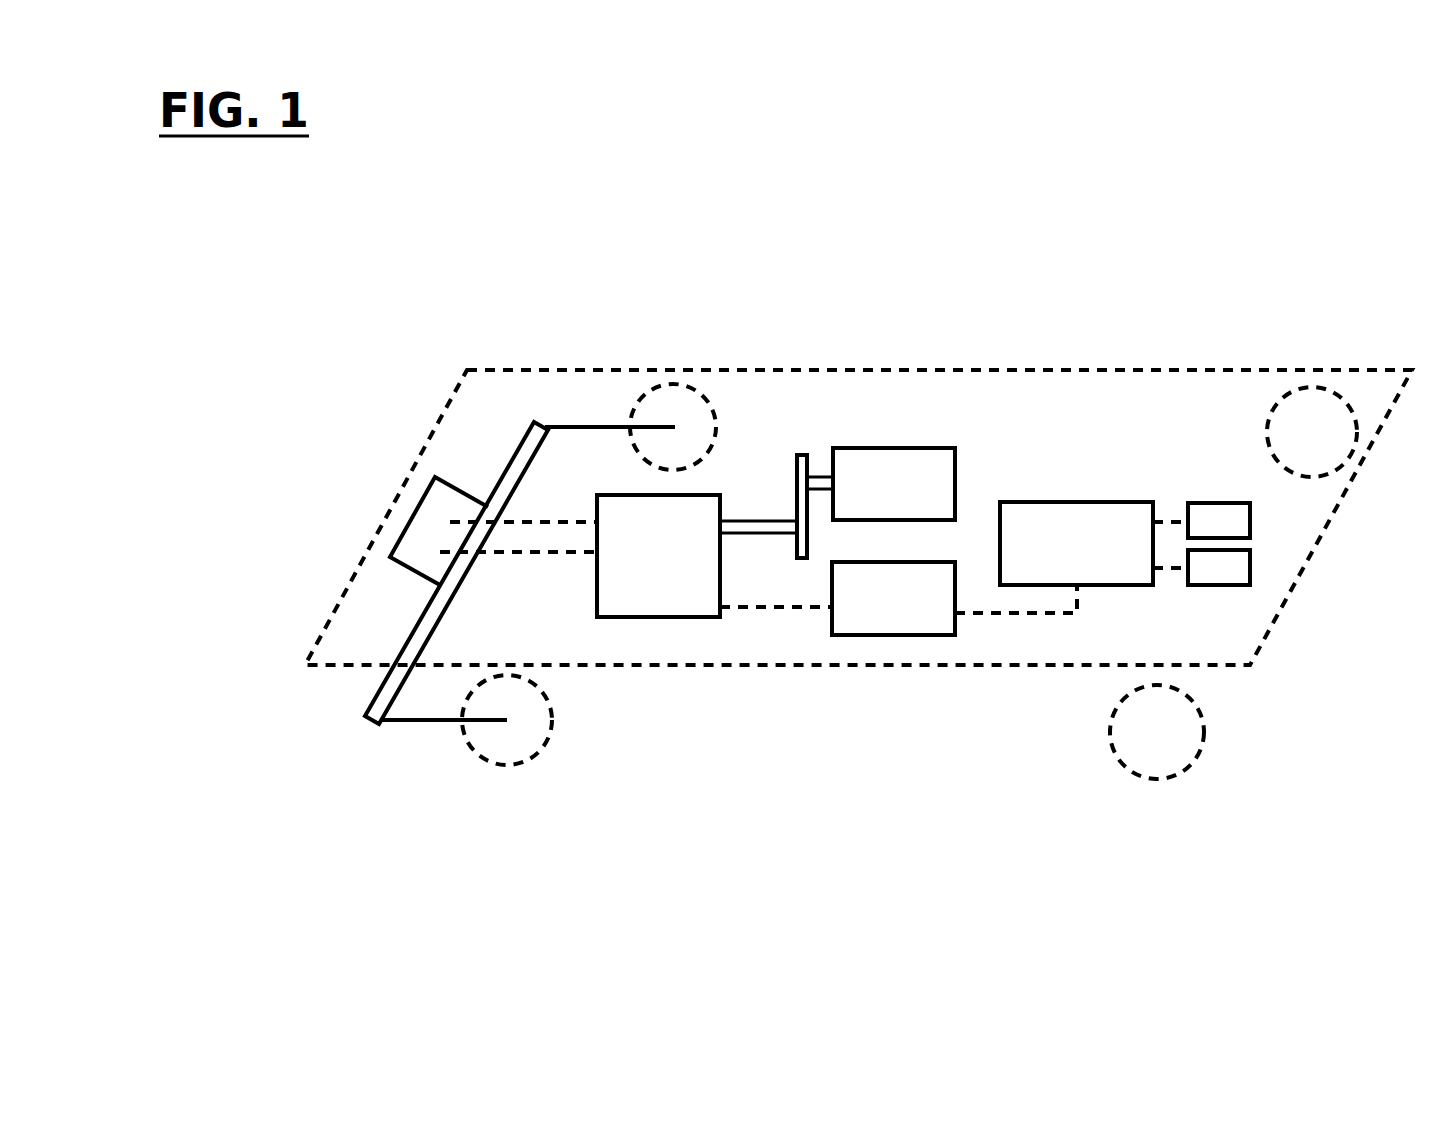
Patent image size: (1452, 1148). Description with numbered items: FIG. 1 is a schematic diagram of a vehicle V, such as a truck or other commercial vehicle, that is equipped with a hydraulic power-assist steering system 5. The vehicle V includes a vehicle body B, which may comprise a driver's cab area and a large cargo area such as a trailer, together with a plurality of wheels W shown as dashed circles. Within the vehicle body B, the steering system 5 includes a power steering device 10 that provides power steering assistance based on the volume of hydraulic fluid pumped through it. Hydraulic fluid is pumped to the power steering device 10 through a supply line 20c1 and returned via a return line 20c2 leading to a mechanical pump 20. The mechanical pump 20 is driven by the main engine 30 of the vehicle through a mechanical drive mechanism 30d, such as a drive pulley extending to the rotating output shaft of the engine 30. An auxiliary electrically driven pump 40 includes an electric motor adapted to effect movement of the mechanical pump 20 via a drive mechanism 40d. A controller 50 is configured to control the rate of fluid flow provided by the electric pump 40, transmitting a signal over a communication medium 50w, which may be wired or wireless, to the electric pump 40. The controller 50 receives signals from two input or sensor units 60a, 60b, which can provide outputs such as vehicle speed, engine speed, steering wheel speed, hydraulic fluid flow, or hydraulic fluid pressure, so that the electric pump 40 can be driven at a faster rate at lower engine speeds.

The vehicle V is at (329, 392).
The vehicle body B is at (319, 598).
The wheels W is at (462, 772).
The hydraulic power-assist steering system 5 is at (900, 558).
The power steering device 10 is at (473, 467).
The mechanical pump 20 is at (720, 469).
The supply line 20c1 is at (556, 537).
The return line 20c2 is at (527, 573).
The main engine 30 is at (850, 426).
The mechanical drive mechanism 30d is at (805, 579).
The auxiliary electrically driven pump 40 is at (961, 541).
The drive mechanism 40d is at (745, 624).
The controller 50 is at (1094, 478).
The communication medium 50w is at (1008, 633).
The input or sensor unit 60a is at (1216, 479).
The input or sensor unit 60b is at (1275, 578).